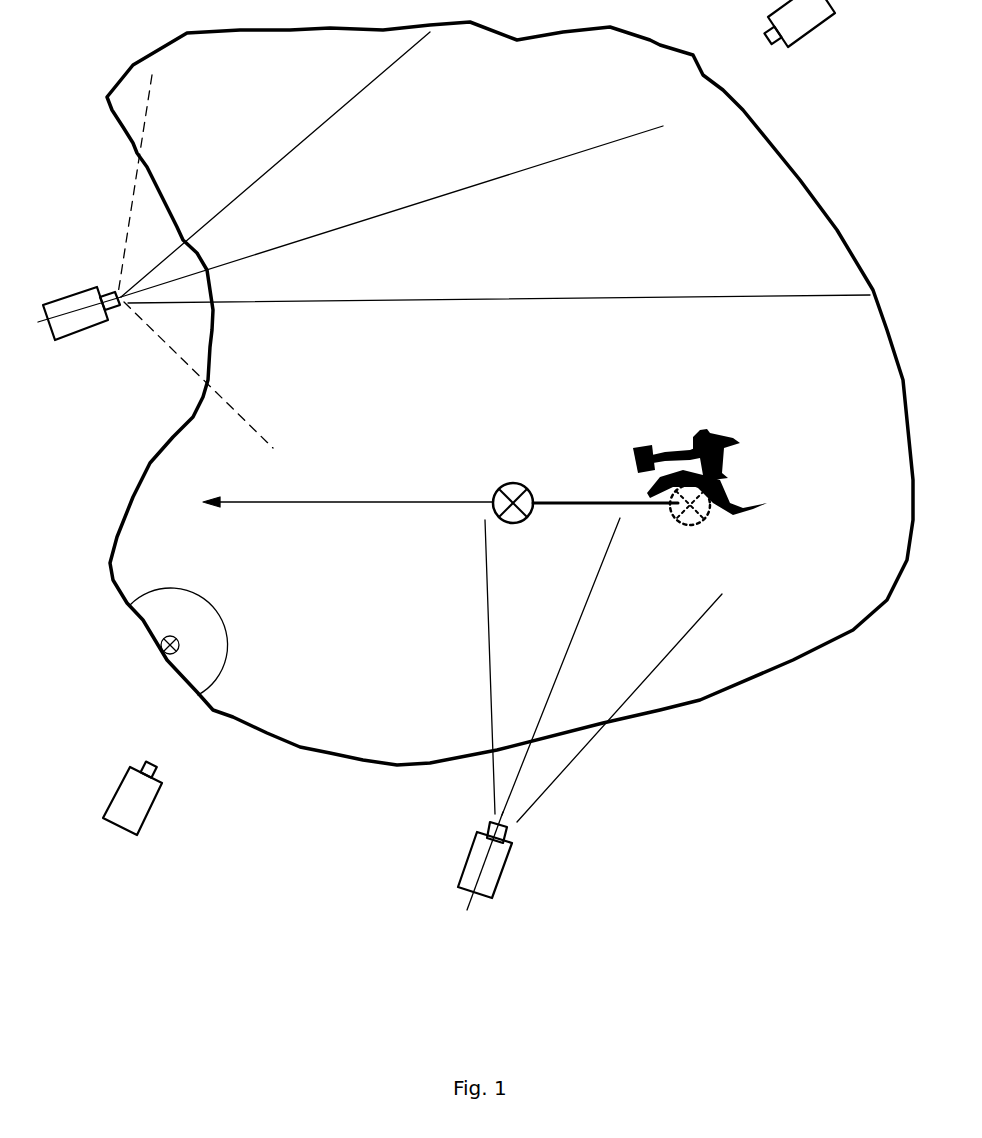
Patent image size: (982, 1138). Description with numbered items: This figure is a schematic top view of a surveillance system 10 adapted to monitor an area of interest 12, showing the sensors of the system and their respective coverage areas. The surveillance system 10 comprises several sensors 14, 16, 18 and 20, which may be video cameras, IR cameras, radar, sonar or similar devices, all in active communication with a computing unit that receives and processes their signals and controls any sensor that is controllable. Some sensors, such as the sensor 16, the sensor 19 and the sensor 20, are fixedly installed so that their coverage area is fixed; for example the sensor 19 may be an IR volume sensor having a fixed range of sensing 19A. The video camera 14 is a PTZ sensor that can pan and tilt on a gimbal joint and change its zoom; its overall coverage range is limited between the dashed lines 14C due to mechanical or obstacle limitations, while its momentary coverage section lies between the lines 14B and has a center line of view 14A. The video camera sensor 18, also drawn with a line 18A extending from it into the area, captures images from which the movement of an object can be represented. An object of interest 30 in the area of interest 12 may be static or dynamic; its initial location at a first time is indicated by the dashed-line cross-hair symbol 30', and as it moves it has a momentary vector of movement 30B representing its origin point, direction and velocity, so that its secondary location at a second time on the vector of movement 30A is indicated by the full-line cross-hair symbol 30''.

The surveillance system 10 is at (760, 843).
The area of interest 12 is at (379, 577).
The video camera 14 is at (78, 350).
The center line (line of view) 14A is at (600, 140).
The lines limiting momentary coverage section 14B is at (325, 108).
The dashed lines limiting overall coverage range 14C is at (147, 125).
The sensor 16 is at (807, 42).
The video camera sensor 18 is at (515, 870).
The camera optical axis 18A is at (585, 620).
The IR volume sensor 19 is at (162, 657).
The fixed range of sensing 19A is at (148, 613).
The sensor 20 is at (158, 823).
The object of interest 30 is at (725, 450).
The dashed-line cross-hair symbol 30' is at (712, 534).
The full-line cross-hair symbol 30'' is at (513, 472).
The vector of movement 30A is at (412, 493).
The momentary vector of movement 30B is at (582, 500).